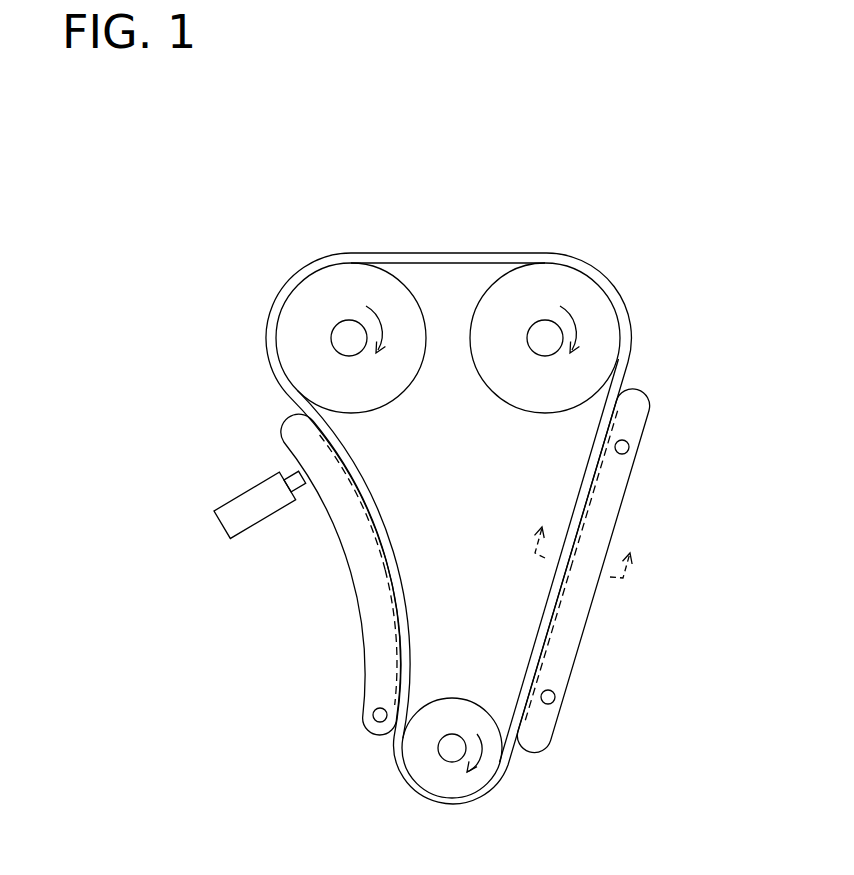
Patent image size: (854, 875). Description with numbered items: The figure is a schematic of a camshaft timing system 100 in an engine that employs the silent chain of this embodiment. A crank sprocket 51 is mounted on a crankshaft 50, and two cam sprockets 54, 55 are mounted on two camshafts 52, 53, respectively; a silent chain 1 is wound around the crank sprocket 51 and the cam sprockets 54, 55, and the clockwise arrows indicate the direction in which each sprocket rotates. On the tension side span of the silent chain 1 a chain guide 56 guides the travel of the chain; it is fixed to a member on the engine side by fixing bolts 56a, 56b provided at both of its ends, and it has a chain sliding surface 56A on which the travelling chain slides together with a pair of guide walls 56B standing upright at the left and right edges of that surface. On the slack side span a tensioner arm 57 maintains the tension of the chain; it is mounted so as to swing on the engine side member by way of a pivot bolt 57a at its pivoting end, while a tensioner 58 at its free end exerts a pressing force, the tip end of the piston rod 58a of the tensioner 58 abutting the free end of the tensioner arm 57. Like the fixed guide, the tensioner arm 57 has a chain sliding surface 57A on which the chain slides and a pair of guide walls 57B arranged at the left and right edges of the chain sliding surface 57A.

The camshaft timing system 100 is at (363, 191).
The silent chain 1 is at (523, 251).
The crankshaft 50 is at (447, 759).
The crank sprocket 51 is at (478, 776).
The camshaft 52 is at (350, 347).
The camshaft 53 is at (542, 347).
The cam sprocket 54 is at (283, 367).
The cam sprocket 55 is at (616, 336).
The chain guide 56 is at (632, 491).
The chain sliding surface 56A is at (590, 484).
The guide walls 56B is at (550, 617).
The fixing bolt 56a is at (629, 448).
The fixing bolt 56b is at (553, 703).
The tensioner arm 57 is at (352, 608).
The chain sliding surface 57A is at (354, 479).
The guide walls 57B is at (383, 530).
The pivot bolt 57a is at (373, 714).
The tensioner 58 is at (250, 523).
The piston rod 58a is at (290, 470).